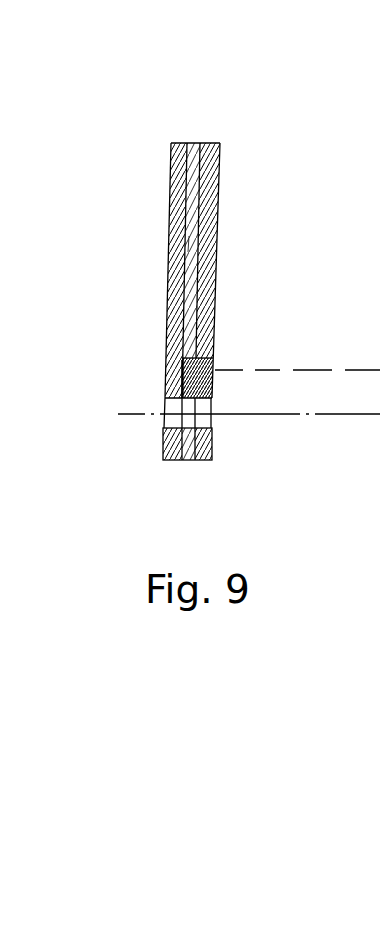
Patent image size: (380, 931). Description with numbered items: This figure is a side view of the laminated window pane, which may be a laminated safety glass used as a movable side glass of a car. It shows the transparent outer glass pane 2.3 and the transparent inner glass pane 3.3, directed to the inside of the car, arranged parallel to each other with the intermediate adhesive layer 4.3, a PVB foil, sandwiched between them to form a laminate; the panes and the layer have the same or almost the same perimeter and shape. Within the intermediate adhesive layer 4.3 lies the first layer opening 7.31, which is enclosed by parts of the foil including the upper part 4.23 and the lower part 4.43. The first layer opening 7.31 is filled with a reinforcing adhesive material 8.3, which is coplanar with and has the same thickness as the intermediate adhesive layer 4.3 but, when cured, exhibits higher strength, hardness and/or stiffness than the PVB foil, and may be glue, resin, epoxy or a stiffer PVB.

The transparent outer glass pane 2.3 is at (182, 168).
The transparent inner glass pane 3.3 is at (220, 167).
The intermediate adhesive layer 4.3 is at (197, 142).
The upper part 4.23 is at (188, 240).
The first layer opening 7.31 is at (183, 373).
The reinforcing adhesive material 8.3 is at (213, 362).
The lower part 4.43 is at (188, 460).